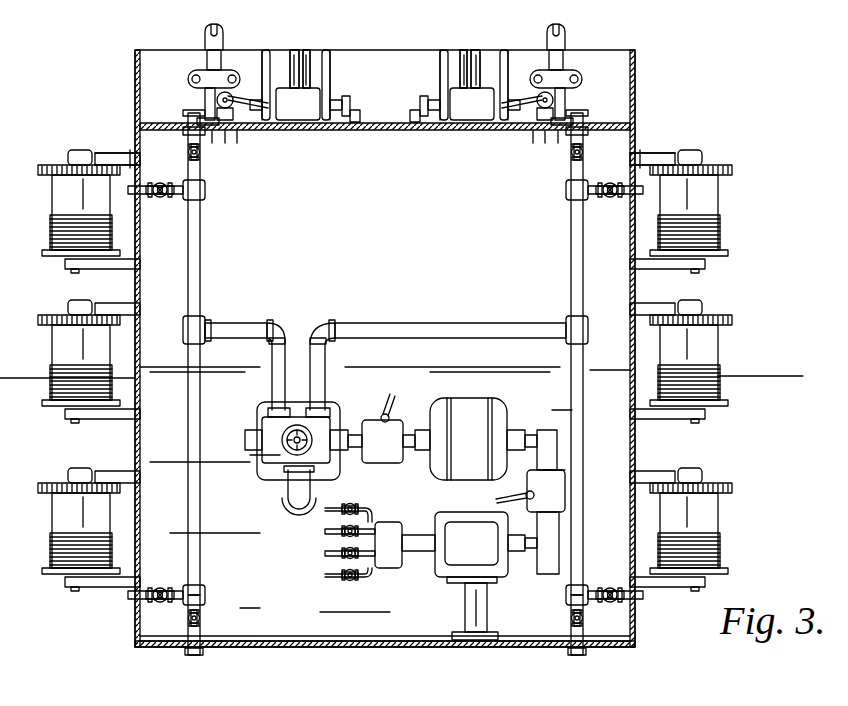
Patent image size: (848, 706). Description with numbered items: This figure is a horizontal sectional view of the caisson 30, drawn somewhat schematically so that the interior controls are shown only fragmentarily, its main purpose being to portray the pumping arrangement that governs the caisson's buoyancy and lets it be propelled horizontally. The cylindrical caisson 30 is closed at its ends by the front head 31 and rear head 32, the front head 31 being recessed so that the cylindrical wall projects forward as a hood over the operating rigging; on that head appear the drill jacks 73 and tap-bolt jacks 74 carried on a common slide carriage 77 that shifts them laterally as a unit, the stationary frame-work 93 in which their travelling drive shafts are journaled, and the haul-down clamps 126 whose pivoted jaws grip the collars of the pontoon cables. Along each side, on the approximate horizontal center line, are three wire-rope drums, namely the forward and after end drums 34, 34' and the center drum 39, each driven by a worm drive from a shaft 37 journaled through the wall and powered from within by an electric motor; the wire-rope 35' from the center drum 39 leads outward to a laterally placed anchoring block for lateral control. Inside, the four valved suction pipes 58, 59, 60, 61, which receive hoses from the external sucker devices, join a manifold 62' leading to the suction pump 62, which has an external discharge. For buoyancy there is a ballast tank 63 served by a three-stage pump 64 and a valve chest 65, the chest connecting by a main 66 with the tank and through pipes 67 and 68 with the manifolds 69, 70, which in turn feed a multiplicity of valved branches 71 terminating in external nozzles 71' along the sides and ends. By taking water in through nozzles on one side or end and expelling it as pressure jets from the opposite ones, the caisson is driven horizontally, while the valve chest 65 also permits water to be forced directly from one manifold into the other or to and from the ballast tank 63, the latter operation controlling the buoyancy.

The caisson 30 is at (648, 117).
The front head 31 is at (448, 131).
The rear head 32 is at (343, 648).
The forward end drum 34 is at (387, 211).
The after end drum 34' is at (388, 529).
The wire-rope 35' is at (760, 366).
The shaft 37 is at (118, 157).
The center drum 39 is at (62, 341).
The suction pipe 58 is at (332, 506).
The suction pipe 59 is at (325, 531).
The suction pipe 60 is at (325, 553).
The suction pipe 61 is at (330, 578).
The suction pump 62 is at (473, 576).
The manifold 62' is at (405, 531).
The ballast tank 63 is at (600, 361).
The three-stage pump 64 is at (266, 487).
The valve chest 65 is at (332, 411).
The main 66 is at (291, 502).
The pipe 67 is at (402, 328).
The pipe 68 is at (243, 338).
The manifold 69 is at (571, 263).
The manifold 70 is at (200, 237).
The valved branch 71 is at (385, 180).
The external nozzle 71' is at (386, 383).
The drill jack 73 is at (317, 46).
The tap-bolt jack 74 is at (294, 42).
The slide carriage 77 is at (322, 98).
The stationary frame-work 93 is at (332, 62).
The haul-down clamp 126 is at (203, 37).